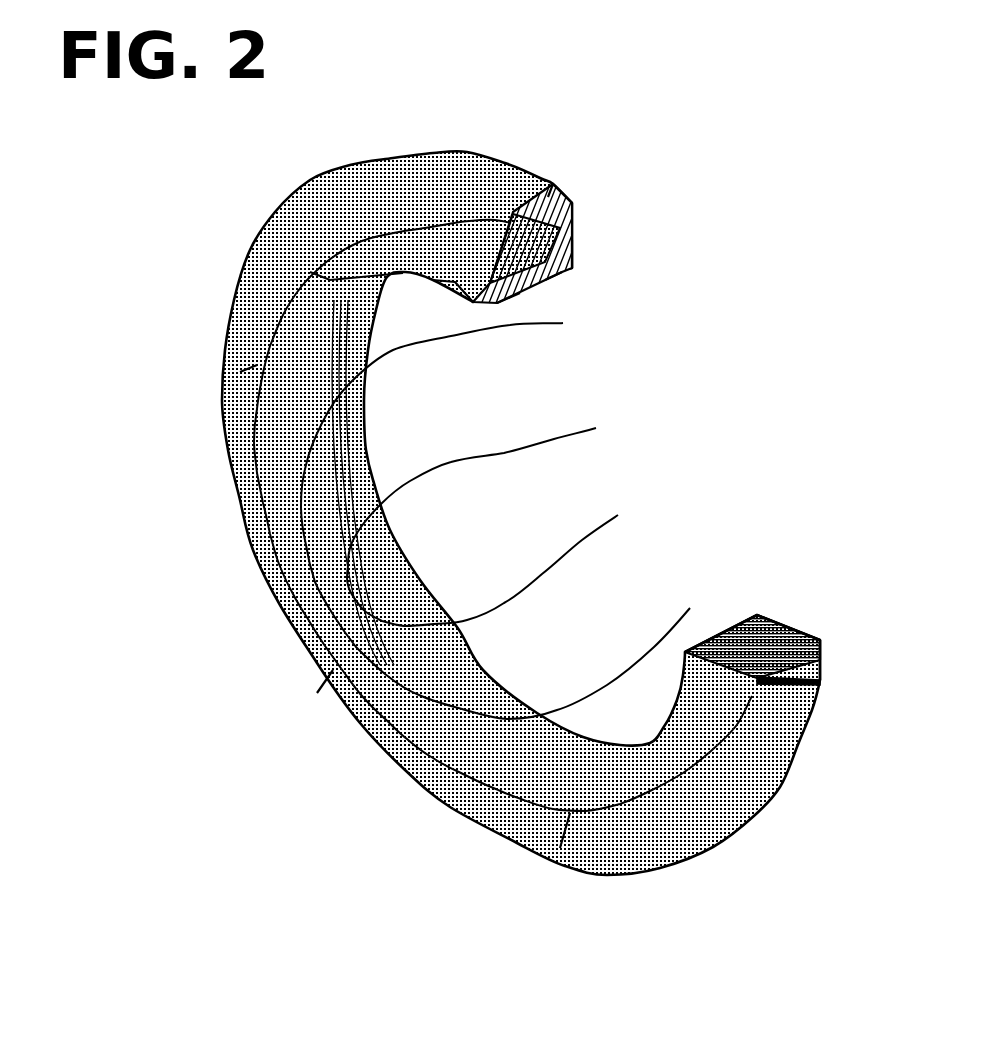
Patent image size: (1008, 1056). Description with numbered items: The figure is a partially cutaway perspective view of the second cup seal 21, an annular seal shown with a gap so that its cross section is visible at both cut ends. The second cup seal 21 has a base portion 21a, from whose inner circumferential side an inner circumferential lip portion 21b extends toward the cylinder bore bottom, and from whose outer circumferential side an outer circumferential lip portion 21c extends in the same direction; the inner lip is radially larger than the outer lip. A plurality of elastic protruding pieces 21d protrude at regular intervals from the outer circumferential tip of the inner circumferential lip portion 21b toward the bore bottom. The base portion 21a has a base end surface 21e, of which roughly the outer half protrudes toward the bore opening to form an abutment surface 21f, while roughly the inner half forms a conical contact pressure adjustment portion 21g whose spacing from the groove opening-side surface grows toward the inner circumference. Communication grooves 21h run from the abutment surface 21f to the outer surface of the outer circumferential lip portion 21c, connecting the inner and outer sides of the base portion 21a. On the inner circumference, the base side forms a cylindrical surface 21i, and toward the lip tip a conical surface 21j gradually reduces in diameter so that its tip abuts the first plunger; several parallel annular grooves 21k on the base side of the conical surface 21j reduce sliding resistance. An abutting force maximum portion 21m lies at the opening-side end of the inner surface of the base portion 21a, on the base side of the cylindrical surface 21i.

The second cup seal 21 is at (548, 64).
The base portion 21a is at (802, 630).
The inner circumferential lip portion 21b is at (707, 643).
The outer circumferential lip portion 21c is at (800, 681).
The elastic protruding pieces 21d is at (257, 365).
The base end surface 21e is at (777, 625).
The abutment surface 21f is at (573, 228).
The contact pressure adjustment portion 21g is at (572, 254).
The communication grooves 21h is at (553, 187).
The cylindrical surface 21i is at (555, 274).
The conical surface 21j is at (523, 291).
The annular grooves 21k is at (367, 553).
The abutting force maximum portion 21m is at (567, 272).